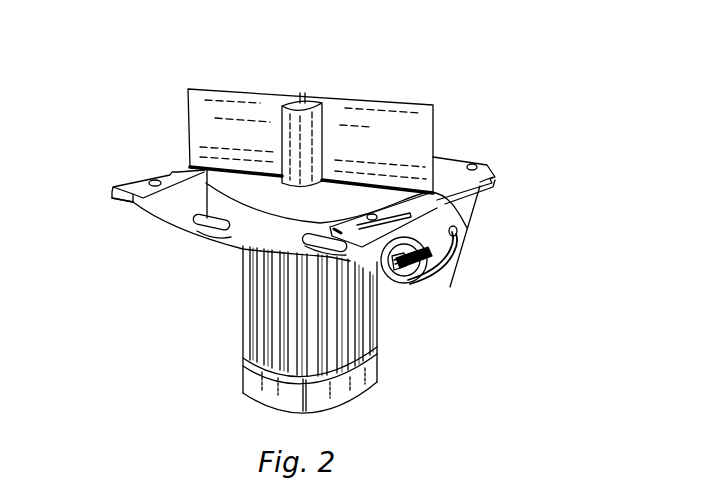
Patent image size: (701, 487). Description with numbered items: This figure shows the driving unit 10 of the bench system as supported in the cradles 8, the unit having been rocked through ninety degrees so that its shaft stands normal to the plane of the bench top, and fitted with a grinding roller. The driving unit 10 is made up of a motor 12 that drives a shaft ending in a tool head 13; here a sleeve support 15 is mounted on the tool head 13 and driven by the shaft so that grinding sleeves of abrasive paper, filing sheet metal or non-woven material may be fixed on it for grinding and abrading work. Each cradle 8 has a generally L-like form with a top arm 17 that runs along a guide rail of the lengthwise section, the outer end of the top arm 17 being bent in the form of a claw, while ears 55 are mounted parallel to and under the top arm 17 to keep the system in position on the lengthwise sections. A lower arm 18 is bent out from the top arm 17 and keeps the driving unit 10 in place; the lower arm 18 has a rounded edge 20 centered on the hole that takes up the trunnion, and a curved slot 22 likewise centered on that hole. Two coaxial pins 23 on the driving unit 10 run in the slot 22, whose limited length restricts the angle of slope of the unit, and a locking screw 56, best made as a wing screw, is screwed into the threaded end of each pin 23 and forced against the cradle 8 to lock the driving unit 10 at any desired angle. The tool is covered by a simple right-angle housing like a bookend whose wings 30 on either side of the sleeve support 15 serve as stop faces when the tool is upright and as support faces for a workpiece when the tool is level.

The cradle 8 is at (476, 232).
The driving unit 10 is at (240, 308).
The motor 12 is at (250, 387).
The tool head 13 is at (243, 229).
The sleeve support 15 is at (297, 130).
The top arm 17 is at (138, 190).
The lower arm 18 is at (460, 208).
The rounded edge 20 is at (422, 286).
The slot 22 is at (446, 258).
The pins 23 is at (443, 276).
The wings 30 is at (310, 141).
The ears 55 is at (118, 210).
The locking screw 56 is at (405, 283).